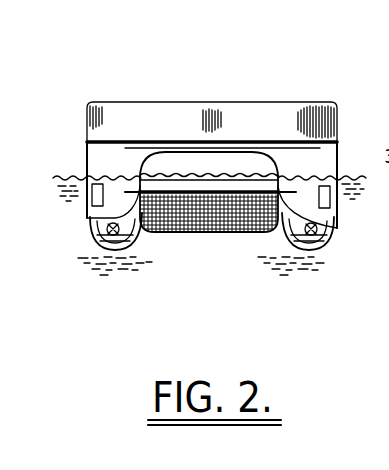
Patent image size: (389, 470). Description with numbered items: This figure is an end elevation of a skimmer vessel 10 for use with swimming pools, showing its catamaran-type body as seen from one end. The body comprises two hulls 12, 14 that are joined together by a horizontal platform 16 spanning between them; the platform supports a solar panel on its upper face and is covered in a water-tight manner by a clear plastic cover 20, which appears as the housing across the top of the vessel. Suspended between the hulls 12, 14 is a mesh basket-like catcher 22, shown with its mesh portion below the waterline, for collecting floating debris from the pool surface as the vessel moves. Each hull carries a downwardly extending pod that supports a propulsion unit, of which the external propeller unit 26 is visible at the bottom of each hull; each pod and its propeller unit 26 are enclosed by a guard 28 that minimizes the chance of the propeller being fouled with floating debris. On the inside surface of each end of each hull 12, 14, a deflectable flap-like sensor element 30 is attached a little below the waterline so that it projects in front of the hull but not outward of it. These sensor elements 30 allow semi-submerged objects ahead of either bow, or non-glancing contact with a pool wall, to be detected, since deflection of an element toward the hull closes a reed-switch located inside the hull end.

The vessel 10 is at (153, 50).
The hull 12 is at (100, 157).
The hull 14 is at (323, 155).
The horizontal platform 16 is at (175, 142).
The clear plastic cover 20 is at (195, 108).
The catcher 22 is at (214, 233).
The propeller unit 26 is at (96, 241).
The guard 28 is at (132, 243).
The sensor element 30 is at (92, 204).